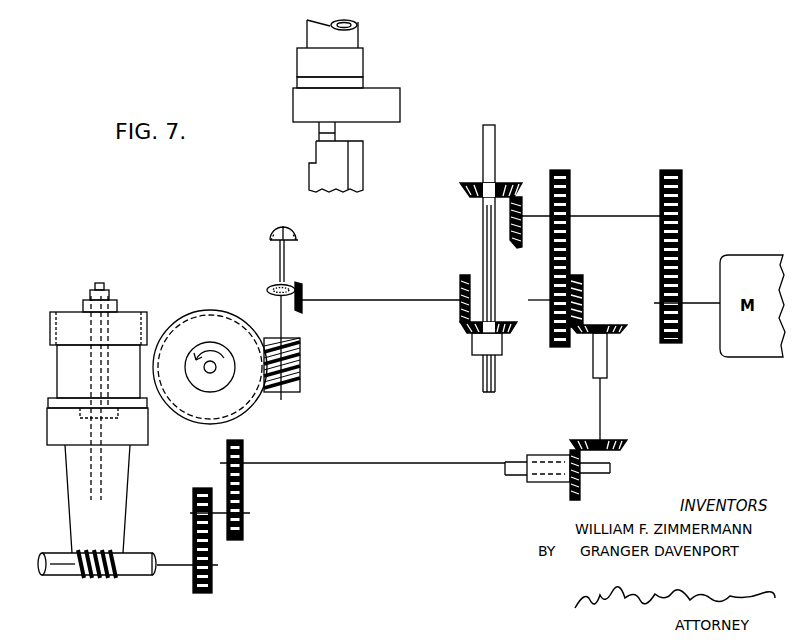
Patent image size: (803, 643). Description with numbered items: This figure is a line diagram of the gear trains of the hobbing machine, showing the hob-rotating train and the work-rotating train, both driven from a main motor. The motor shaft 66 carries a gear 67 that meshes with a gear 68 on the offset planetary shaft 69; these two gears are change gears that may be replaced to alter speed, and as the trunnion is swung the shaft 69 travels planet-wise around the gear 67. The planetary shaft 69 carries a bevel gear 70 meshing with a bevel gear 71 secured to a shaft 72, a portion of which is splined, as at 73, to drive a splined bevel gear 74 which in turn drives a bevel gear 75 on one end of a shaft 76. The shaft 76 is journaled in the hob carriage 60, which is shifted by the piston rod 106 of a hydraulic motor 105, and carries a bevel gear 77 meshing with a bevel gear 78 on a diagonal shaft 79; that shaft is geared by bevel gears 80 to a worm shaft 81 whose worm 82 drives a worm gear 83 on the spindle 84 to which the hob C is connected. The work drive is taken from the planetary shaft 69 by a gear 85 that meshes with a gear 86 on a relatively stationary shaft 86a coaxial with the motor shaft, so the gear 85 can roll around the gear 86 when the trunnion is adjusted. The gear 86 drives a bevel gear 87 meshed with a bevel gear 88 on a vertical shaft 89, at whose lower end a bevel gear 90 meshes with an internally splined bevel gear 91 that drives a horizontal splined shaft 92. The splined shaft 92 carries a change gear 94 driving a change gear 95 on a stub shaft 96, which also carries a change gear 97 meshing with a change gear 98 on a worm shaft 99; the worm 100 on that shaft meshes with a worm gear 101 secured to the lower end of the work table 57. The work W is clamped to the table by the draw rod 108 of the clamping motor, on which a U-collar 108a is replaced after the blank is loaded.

The hydraulic motor 105 is at (355, 37).
The piston rod 106 is at (337, 133).
The hob carriage 60 is at (321, 157).
The shaft 72 is at (491, 133).
The bevel gear 71 is at (500, 183).
The bevel gear 70 is at (517, 248).
The splined portion 73 is at (498, 287).
The bevel gear 75 is at (458, 285).
The splined bevel gear 74 is at (510, 322).
The shaft 76 is at (392, 300).
The gear 85 is at (570, 178).
The gear 86 is at (563, 348).
The shaft 86a is at (547, 302).
The planetary shaft 69 is at (606, 216).
The bevel gear 87 is at (585, 292).
The bevel gear 88 is at (620, 335).
The vertical shaft 89 is at (601, 400).
The gear 68 is at (683, 180).
The gear 67 is at (683, 288).
The motor shaft 66 is at (701, 305).
The bevel gears 80 is at (298, 239).
The shaft 79 is at (287, 259).
The bevel gear 78 is at (272, 285).
The bevel gear 77 is at (300, 289).
The worm shaft 81 is at (285, 331).
The worm 82 is at (302, 369).
The worm gear 83 is at (210, 310).
The spindle 84 is at (212, 359).
The hob C is at (193, 379).
The U-collar 108a is at (85, 300).
The work W is at (135, 322).
The work table 57 is at (135, 437).
The piston rod 108 is at (95, 462).
The worm gear 101 is at (48, 578).
The worm 100 is at (95, 578).
The worm shaft 99 is at (177, 570).
The change gear 98 is at (210, 593).
The change gear 97 is at (196, 493).
The change gear 94 is at (244, 449).
The change gear 95 is at (244, 500).
The stub shaft 96 is at (244, 516).
The splined shaft 92 is at (513, 463).
The internally splined bevel gear 91 is at (571, 460).
The bevel gear 90 is at (618, 445).